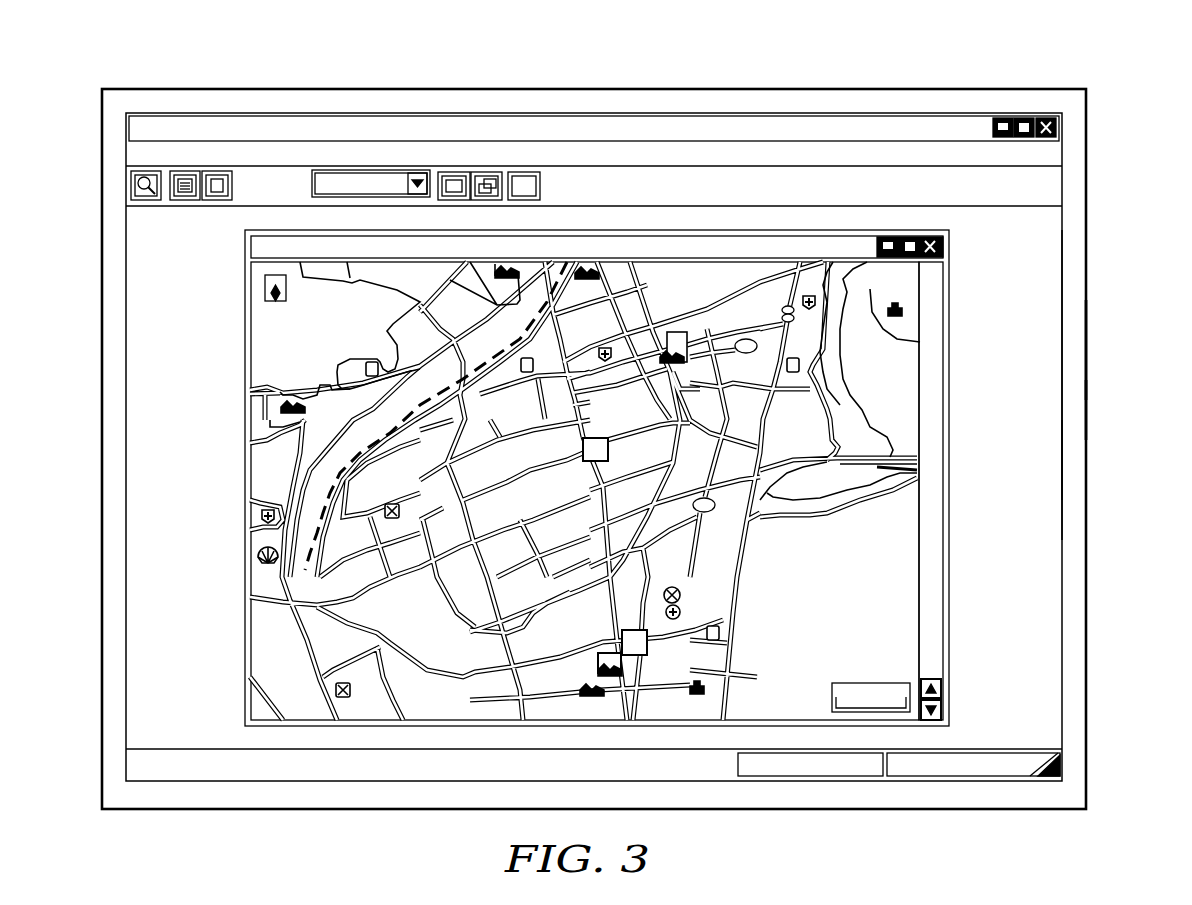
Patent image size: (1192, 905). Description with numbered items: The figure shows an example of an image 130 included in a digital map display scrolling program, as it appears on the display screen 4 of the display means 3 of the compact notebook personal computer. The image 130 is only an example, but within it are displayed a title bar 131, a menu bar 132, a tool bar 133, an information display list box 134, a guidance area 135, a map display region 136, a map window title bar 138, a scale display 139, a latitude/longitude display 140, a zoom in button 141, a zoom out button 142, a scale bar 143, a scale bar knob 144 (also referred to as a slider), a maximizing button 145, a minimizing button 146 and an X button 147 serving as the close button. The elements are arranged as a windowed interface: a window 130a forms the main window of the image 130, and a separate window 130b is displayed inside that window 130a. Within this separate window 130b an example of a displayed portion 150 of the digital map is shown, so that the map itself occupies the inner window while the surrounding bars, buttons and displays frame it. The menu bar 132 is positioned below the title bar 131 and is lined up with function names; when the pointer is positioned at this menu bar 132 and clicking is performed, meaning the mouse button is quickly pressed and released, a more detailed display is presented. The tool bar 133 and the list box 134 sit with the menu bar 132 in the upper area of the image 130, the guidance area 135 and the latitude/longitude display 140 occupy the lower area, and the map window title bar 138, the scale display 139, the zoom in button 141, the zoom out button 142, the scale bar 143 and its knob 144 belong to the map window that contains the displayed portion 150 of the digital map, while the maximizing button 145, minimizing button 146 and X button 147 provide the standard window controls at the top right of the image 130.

The display means 3 is at (1103, 368).
The display screen 4 is at (1089, 409).
The image 130 is at (537, 86).
The window 130a is at (1064, 294).
The separate window 130b is at (1058, 457).
The title bar 131 is at (148, 118).
The menu bar 132 is at (200, 150).
The tool bar 133 is at (270, 178).
The list box 134 is at (367, 172).
The guidance area 135 is at (150, 777).
The map display region 136 is at (213, 751).
The map window title bar 138 is at (258, 248).
The scale display 139 is at (843, 695).
The latitude/longitude display 140 is at (902, 770).
The zoom in button 141 is at (945, 711).
The zoom out button 142 is at (945, 684).
The scale bar 143 is at (930, 316).
The scale bar knob 144 is at (947, 530).
The maximizing button 145 is at (1022, 118).
The minimizing button 146 is at (998, 118).
The X button 147 is at (1060, 128).
The displayed portion of the digital map 150 is at (255, 658).